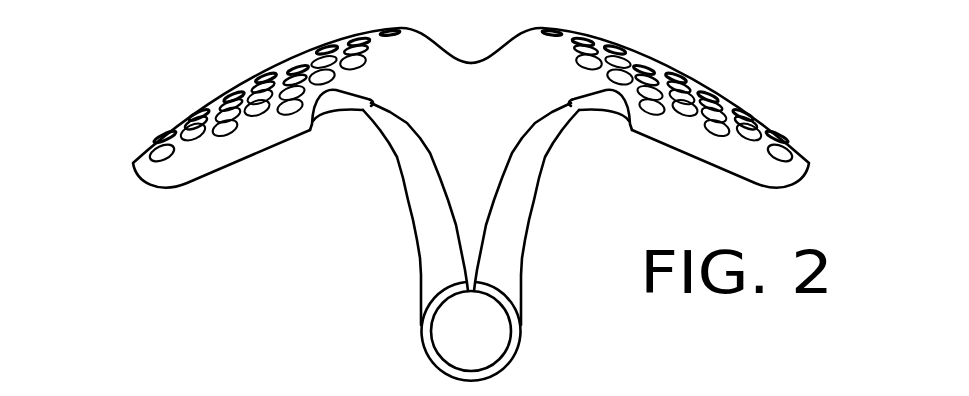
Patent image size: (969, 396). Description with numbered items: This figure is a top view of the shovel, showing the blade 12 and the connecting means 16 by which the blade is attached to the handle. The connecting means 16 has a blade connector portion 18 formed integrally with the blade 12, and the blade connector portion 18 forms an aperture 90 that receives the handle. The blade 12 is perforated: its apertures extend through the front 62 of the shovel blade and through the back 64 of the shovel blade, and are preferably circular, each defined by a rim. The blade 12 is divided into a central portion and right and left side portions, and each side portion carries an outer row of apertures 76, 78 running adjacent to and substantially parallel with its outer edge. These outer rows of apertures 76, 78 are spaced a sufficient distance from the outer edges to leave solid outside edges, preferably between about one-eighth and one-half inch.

The blade 12 is at (175, 190).
The connecting means 16 is at (418, 283).
The blade connector portion 18 is at (378, 126).
The front of the shovel blade 62 is at (790, 183).
The back of the shovel blade 64 is at (733, 98).
The row of apertures 76 is at (795, 145).
The row of apertures 78 is at (163, 143).
The aperture 90 is at (508, 350).